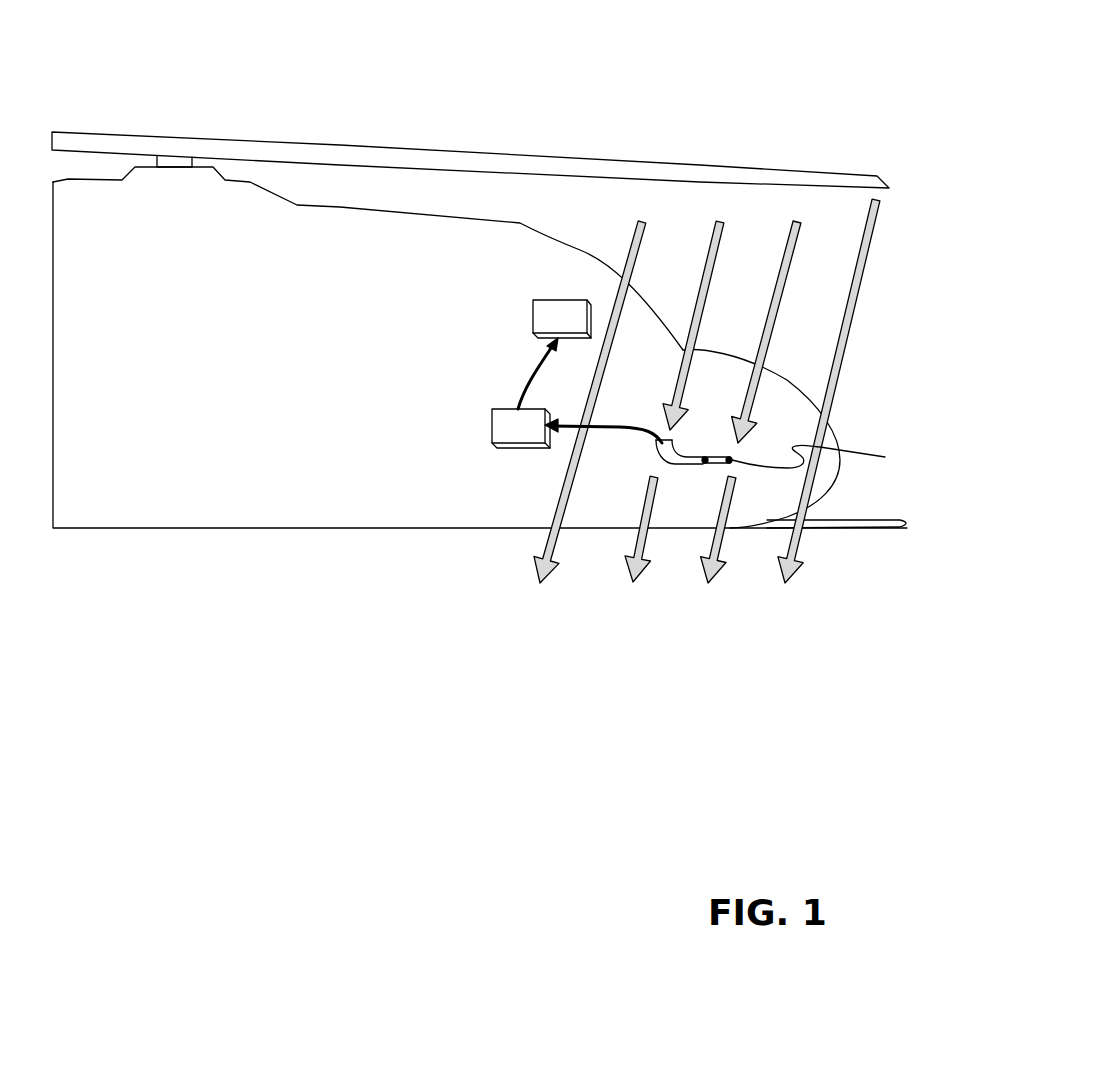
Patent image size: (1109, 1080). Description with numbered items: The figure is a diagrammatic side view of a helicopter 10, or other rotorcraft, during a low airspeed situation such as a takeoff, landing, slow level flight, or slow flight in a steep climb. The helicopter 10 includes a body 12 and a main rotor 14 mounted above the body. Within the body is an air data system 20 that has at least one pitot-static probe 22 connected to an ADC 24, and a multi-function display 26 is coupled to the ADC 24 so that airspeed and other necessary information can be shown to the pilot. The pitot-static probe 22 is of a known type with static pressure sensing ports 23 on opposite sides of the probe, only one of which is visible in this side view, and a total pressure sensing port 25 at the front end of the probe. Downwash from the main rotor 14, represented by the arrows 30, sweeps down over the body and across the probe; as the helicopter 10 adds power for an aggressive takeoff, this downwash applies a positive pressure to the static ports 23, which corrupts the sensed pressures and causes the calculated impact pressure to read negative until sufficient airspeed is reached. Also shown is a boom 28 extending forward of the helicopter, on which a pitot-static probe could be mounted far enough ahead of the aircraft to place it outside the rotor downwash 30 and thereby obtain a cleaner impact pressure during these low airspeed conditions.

The helicopter 10 is at (693, 90).
The body 12 is at (326, 527).
The rotor 14 is at (158, 140).
The air data system 20 is at (405, 366).
The pitot-static probe 22 is at (702, 466).
The static pressure sensing ports 23 is at (690, 478).
The ADC 24 is at (503, 450).
The total pressure sensing port 25 is at (823, 457).
The multi-function display 26 is at (537, 307).
The boom 28 is at (875, 538).
The downwash 30 is at (640, 242).